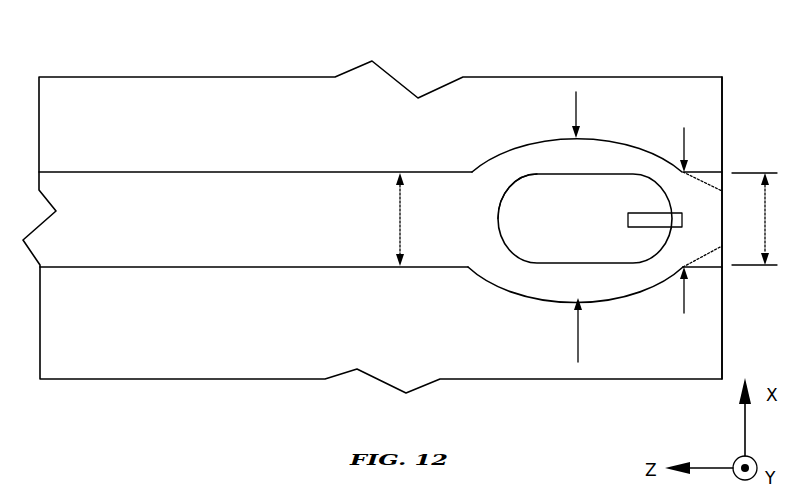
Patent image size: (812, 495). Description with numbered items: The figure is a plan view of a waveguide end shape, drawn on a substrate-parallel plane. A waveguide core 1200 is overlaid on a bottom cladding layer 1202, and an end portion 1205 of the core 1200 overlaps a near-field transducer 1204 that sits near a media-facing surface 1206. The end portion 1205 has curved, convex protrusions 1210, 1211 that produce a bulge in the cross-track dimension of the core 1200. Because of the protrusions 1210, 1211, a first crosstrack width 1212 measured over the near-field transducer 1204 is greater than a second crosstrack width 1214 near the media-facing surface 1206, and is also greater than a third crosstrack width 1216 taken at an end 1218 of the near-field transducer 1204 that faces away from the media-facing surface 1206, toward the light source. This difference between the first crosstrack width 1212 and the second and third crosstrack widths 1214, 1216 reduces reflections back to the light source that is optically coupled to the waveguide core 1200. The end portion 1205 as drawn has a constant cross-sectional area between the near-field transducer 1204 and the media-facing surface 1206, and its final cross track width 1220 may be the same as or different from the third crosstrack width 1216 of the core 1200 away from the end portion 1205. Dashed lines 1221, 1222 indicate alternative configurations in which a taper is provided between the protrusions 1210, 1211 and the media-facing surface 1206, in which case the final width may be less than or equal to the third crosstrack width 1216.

The waveguide core 1200 is at (188, 180).
The bottom cladding layer 1202 is at (278, 92).
The near-field transducer 1204 is at (590, 218).
The end portion 1205 is at (722, 57).
The media-facing surface 1206 is at (722, 125).
The curved convex protrusion 1210 is at (530, 140).
The curved convex protrusion 1211 is at (548, 299).
The first crosstrack width 1212 is at (578, 362).
The second crosstrack width 1214 is at (684, 313).
The third crosstrack width 1216 is at (401, 219).
The end of the near-field transducer 1218 is at (503, 213).
The final cross track width 1220 is at (760, 219).
The dashed line 1221 is at (705, 255).
The dashed line 1222 is at (716, 190).